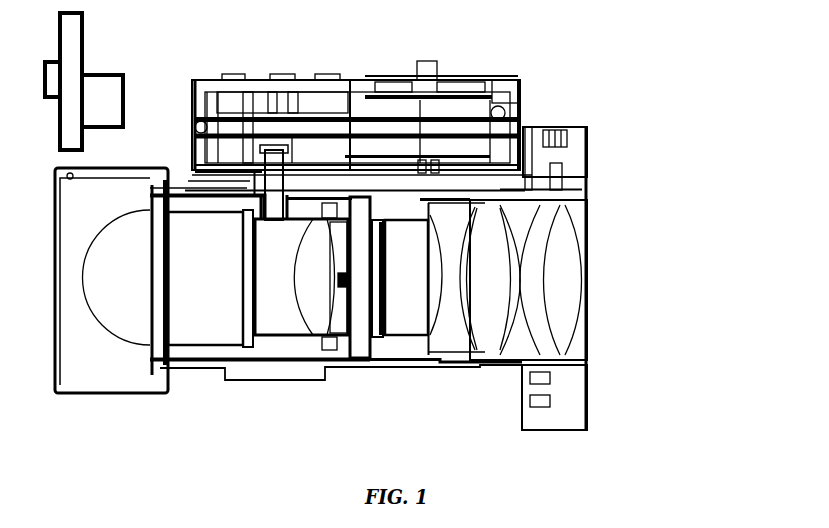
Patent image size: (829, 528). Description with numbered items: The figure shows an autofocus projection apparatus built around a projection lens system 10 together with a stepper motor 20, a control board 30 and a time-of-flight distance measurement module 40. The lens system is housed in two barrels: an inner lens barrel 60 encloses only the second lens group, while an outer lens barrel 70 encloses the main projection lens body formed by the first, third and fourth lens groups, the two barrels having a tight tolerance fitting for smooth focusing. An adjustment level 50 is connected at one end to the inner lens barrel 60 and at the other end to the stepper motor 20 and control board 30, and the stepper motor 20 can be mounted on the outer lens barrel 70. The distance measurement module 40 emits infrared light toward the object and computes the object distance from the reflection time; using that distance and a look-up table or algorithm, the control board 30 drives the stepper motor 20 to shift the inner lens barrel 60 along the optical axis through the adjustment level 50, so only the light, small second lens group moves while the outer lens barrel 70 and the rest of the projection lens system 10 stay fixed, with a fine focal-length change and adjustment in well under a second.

The projection lens system 10 is at (558, 302).
The stepper motor 20 is at (503, 159).
The control board 30 is at (357, 127).
The time-of-flight (TOF) distance measurement module 40 is at (99, 62).
The adjustment level 50 is at (276, 185).
The inner lens barrel 60 is at (232, 358).
The outer lens barrel 70 is at (407, 357).